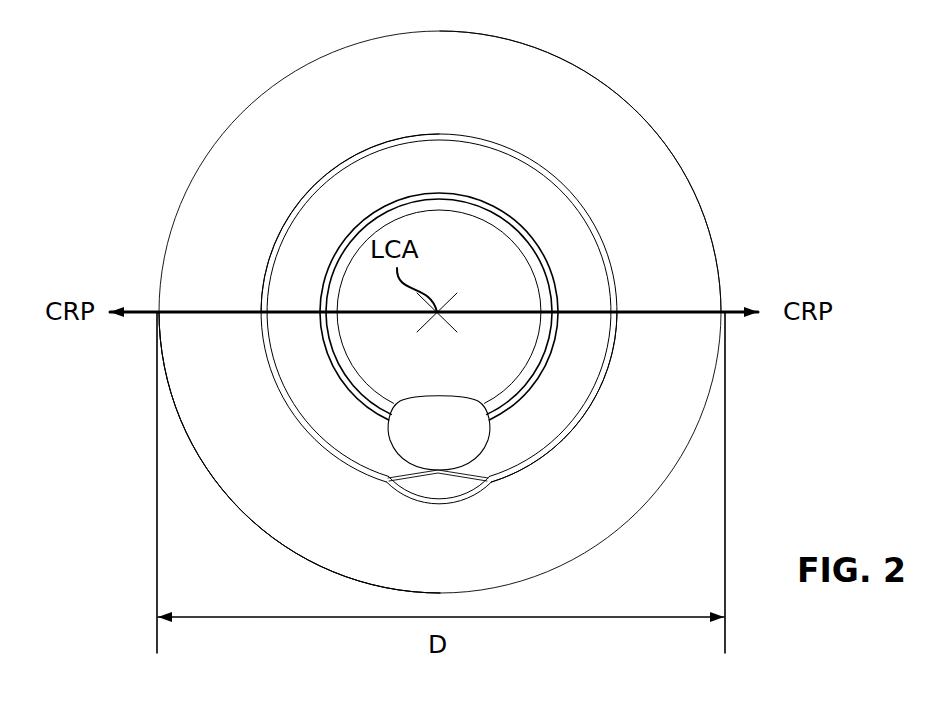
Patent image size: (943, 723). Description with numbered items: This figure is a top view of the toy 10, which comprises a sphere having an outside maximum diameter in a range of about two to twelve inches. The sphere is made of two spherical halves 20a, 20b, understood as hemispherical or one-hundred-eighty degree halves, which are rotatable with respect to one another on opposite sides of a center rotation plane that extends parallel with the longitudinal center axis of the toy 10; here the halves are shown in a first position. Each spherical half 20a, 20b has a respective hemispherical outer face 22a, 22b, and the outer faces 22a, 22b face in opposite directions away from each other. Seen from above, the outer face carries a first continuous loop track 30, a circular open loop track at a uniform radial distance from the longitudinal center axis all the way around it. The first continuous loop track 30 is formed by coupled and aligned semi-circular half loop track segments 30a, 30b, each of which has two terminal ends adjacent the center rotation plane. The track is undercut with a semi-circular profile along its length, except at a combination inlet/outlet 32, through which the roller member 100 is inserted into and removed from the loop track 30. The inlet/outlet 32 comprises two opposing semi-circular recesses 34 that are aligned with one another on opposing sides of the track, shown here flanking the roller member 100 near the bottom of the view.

The toy 10 is at (133, 70).
The spherical half 20a is at (143, 545).
The spherical half 20b is at (695, 67).
The spherical half outer face 22a is at (197, 483).
The spherical half outer face 22b is at (690, 140).
The first continuous loop track 30 is at (573, 246).
The semi-circular half loop track segment 30a is at (578, 357).
The semi-circular half loop track segment 30b is at (292, 285).
The combination inlet/outlet 32 is at (516, 433).
The semi-circular recesses 34 is at (417, 398).
The roller member 100 is at (457, 430).